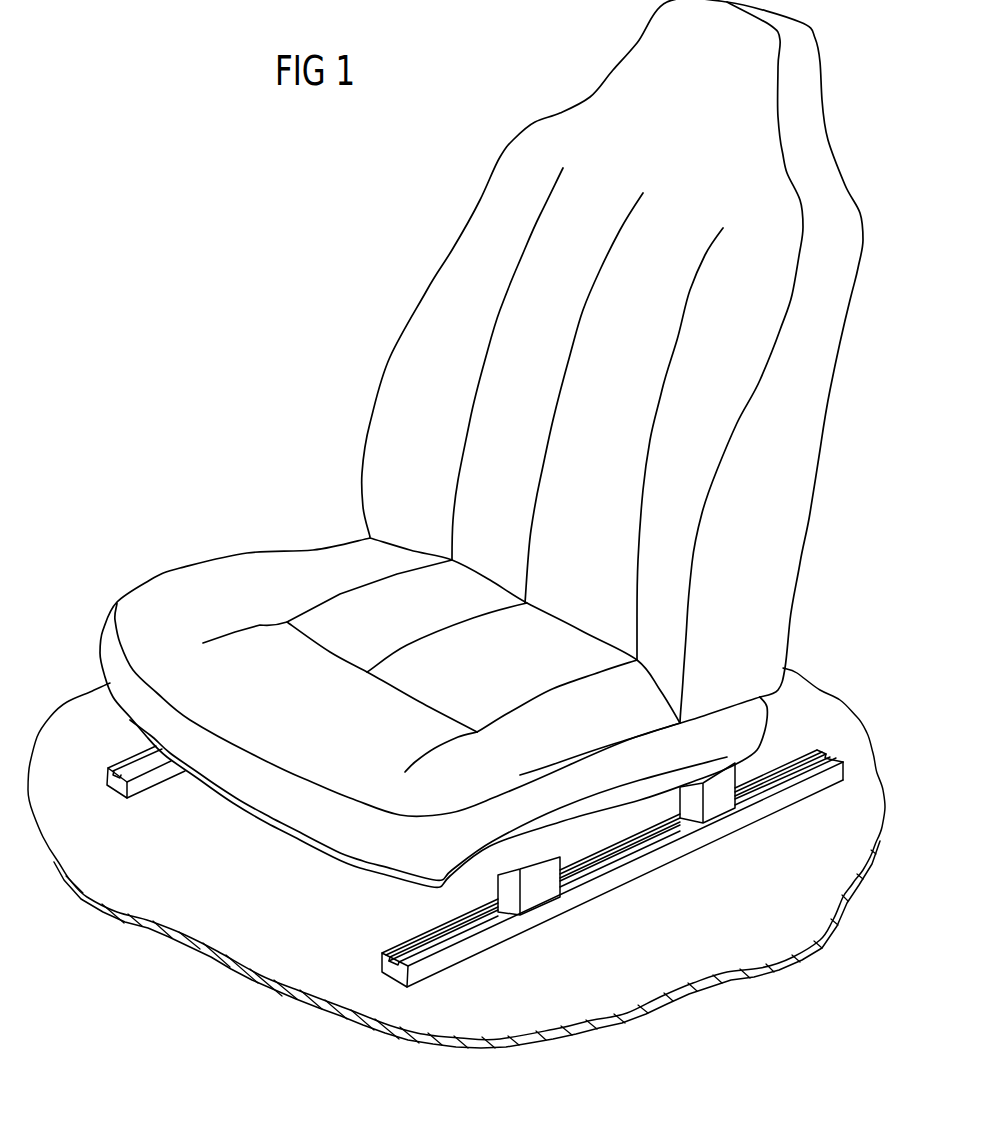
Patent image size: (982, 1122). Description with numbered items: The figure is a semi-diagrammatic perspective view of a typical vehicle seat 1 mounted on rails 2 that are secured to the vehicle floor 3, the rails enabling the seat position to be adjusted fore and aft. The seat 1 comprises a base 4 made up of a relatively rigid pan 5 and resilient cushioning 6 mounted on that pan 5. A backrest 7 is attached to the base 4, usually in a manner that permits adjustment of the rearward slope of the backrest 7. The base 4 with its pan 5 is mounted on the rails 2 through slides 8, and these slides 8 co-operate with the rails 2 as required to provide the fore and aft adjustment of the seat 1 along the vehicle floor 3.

The vehicle seat 1 is at (211, 524).
The rails 2 is at (155, 779).
The vehicle floor 3 is at (297, 950).
The base 4 is at (431, 694).
The pan 5 is at (600, 817).
The resilient cushioning 6 is at (302, 568).
The backrest 7 is at (468, 334).
The slides 8 is at (537, 888).